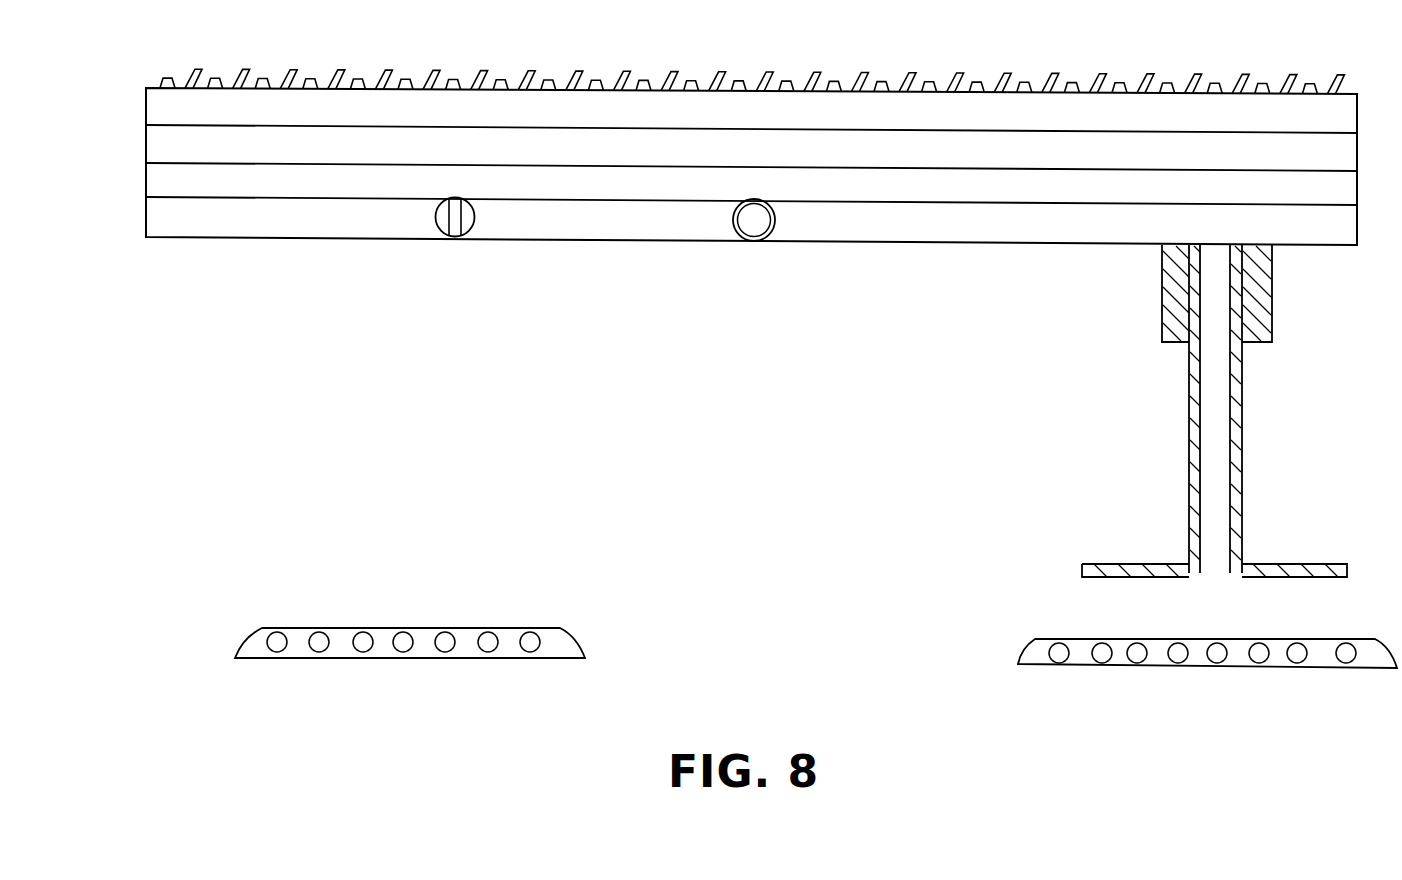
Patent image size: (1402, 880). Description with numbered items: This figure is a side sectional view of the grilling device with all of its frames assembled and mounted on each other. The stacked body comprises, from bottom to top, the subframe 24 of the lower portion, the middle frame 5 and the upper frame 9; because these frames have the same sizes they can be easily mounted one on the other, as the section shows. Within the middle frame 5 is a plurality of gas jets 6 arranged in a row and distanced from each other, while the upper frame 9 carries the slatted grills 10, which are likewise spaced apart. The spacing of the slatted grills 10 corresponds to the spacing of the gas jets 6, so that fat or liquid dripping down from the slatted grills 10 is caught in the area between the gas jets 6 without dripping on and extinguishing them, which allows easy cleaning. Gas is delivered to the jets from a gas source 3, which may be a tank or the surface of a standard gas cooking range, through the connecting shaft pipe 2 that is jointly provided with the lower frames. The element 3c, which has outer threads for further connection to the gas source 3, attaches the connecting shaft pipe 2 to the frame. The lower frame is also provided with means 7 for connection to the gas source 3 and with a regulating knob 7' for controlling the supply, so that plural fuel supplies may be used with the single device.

The connecting shaft pipe 2 is at (1241, 470).
The gas source 3 is at (560, 628).
The attaching element 3c is at (1272, 293).
The middle frame 5 is at (145, 152).
The gas jets 6 is at (1317, 88).
The connecting means 7 is at (716, 243).
The regulating knob 7' is at (484, 124).
The upper frame 9 is at (145, 110).
The slatted grills 10 is at (1128, 86).
The subframe 24 is at (145, 222).